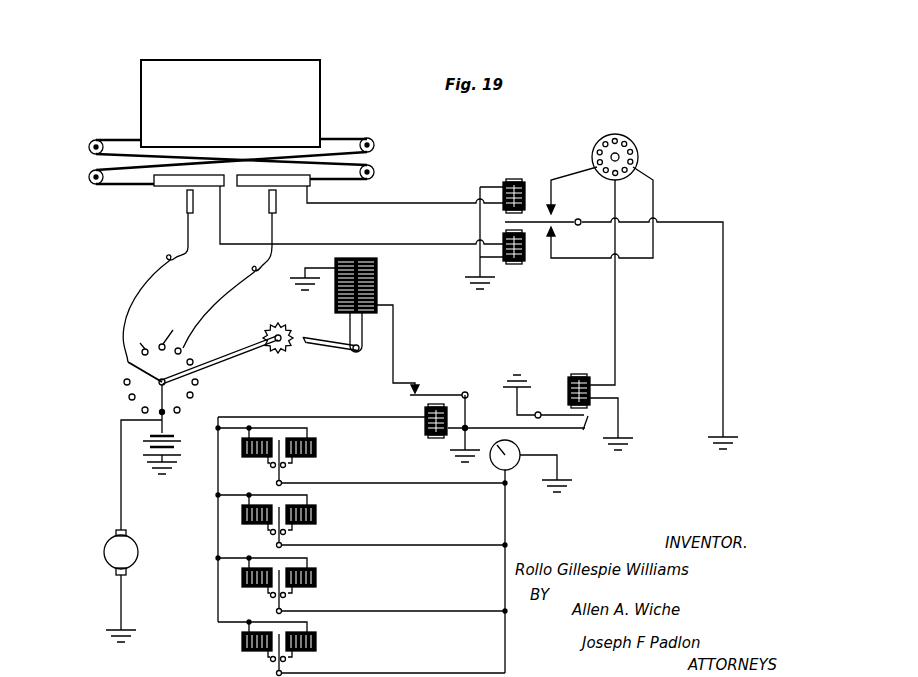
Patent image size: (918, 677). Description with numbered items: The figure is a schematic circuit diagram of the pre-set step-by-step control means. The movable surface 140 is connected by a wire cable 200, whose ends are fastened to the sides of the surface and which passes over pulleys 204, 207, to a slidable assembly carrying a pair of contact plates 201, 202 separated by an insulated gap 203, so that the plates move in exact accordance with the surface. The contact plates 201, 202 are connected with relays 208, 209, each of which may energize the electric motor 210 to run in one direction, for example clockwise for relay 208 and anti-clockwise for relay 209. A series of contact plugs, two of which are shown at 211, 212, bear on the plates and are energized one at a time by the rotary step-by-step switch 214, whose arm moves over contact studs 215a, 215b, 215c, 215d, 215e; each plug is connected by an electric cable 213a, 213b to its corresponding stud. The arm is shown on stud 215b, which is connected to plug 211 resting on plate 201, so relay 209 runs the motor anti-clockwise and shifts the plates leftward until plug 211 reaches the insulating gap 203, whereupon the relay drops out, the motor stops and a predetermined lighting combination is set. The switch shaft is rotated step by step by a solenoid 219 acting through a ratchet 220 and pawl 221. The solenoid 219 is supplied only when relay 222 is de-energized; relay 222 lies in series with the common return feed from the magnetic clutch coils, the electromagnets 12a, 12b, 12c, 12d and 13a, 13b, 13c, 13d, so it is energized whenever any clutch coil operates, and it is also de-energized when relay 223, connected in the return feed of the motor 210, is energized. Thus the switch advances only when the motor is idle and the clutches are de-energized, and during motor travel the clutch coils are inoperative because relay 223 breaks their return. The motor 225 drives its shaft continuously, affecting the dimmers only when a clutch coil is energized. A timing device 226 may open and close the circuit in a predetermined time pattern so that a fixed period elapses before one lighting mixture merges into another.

The movable surface 140 is at (321, 99).
The wire cable 200 is at (343, 138).
The pulley 204 is at (89, 147).
The pulley 207 is at (89, 178).
The contact plate 202 is at (310, 183).
The contact plate 201 is at (160, 186).
The insulated gap 203 is at (233, 190).
The contact plug 211 is at (184, 213).
The contact plug 212 is at (280, 206).
The electric cable 213a is at (140, 291).
The electric cable 213b is at (223, 296).
The contact stud 215a is at (124, 383).
The contact stud 215b is at (127, 362).
The contact stud 215c is at (149, 337).
The contact stud 215d is at (182, 325).
The contact stud 215e is at (182, 350).
The rotary step-by-step switch 214 is at (148, 393).
The motor 225 is at (104, 556).
The ratchet 220 is at (275, 354).
The pawl 221 is at (298, 340).
The solenoid 219 is at (378, 283).
The relay 222 is at (424, 432).
The relay 208 is at (527, 186).
The relay 209 is at (528, 260).
The electric motor 210 is at (637, 152).
The relay 223 is at (568, 380).
The timing device 226 is at (512, 471).
The electromagnet 12a is at (255, 459).
The electromagnet 12b is at (255, 526).
The electromagnet 12c is at (255, 589).
The electromagnet 12d is at (255, 652).
The electromagnet 13a is at (312, 460).
The electromagnet 13b is at (312, 527).
The electromagnet 13c is at (312, 590).
The electromagnet 13d is at (320, 652).